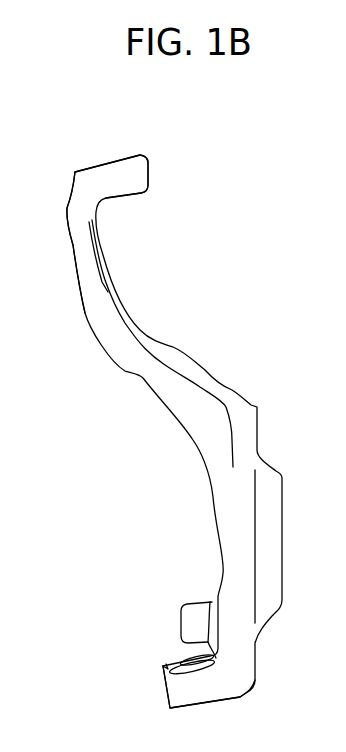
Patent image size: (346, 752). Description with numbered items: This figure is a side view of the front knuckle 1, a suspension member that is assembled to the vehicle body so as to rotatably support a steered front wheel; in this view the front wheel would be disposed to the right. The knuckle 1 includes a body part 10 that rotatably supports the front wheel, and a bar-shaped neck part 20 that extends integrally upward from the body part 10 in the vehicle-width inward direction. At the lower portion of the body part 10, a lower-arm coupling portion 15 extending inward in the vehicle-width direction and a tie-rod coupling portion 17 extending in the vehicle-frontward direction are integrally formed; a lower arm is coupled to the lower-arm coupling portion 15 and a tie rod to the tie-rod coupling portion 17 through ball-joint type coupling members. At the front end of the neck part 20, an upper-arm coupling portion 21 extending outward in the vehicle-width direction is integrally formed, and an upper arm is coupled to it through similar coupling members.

The front knuckle 1 is at (236, 195).
The body part 10 is at (282, 497).
The lower-arm coupling portion 15 is at (166, 692).
The tie-rod coupling portion 17 is at (181, 624).
The neck part 20 is at (70, 250).
The upper-arm coupling portion 21 is at (150, 168).